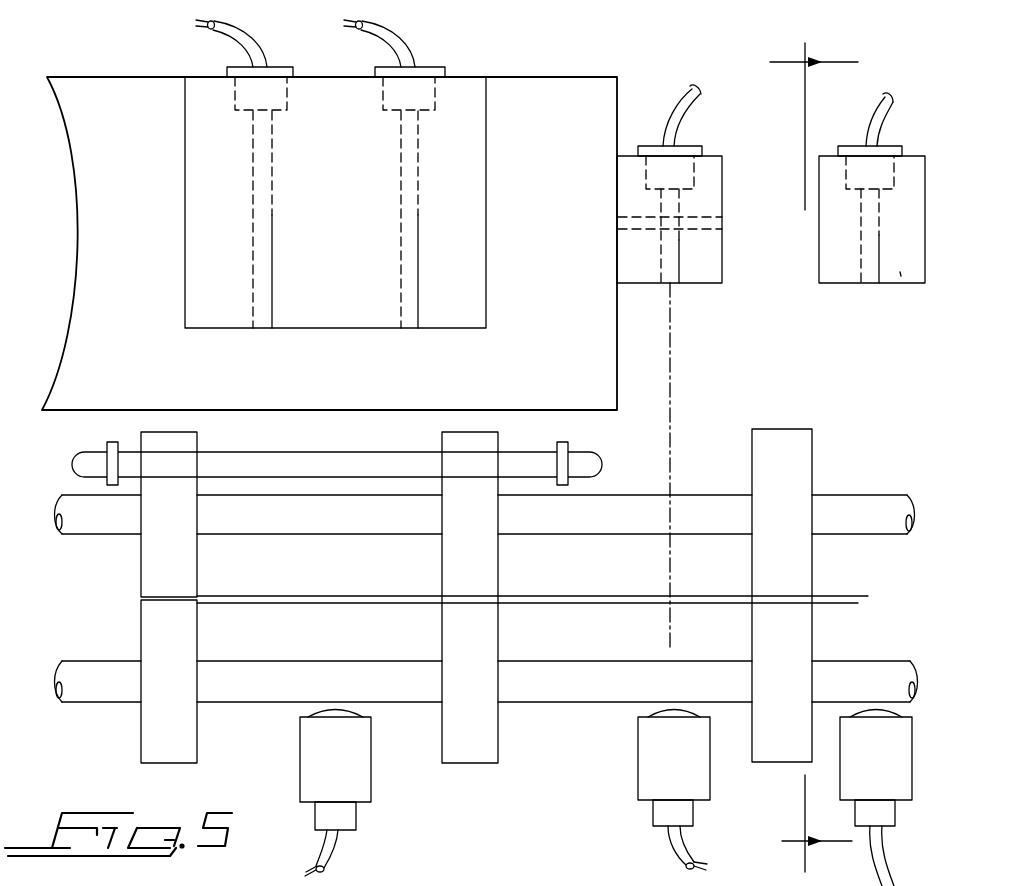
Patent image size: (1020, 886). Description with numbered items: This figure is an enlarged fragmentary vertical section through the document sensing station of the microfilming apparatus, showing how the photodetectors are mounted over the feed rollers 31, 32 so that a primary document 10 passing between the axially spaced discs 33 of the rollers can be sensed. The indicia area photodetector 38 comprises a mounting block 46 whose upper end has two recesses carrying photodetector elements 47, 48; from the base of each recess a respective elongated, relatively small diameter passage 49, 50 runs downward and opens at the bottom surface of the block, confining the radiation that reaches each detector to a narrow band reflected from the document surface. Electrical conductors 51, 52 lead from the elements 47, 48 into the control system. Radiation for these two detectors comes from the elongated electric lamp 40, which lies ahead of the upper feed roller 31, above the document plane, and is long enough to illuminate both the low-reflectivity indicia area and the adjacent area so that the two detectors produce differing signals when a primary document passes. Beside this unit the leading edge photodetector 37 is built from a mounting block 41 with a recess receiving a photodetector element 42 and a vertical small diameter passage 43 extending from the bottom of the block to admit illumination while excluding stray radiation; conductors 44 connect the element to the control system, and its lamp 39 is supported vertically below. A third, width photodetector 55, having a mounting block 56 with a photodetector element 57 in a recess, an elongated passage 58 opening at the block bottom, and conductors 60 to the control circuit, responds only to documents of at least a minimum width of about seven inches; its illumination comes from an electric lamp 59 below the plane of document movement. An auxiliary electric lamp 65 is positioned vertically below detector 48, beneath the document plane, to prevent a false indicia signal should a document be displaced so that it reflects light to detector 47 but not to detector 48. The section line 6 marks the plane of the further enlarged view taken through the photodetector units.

The section line 6— 6 is at (814, 458).
The primary document 10 is at (377, 595).
The feed roller 31 is at (118, 535).
The feed roller 32 is at (118, 703).
The discs 33 is at (152, 575).
The leading edge photodetector 37 is at (722, 185).
The indicia area photodetector 38 is at (527, 128).
The electric lamp 39 is at (638, 765).
The elongated electric lamp 40 is at (340, 452).
The mounting block 41 is at (712, 230).
The photodetector element 42 is at (647, 130).
The passage 43 is at (679, 283).
The electrical conductors 44 is at (683, 100).
The mounting block 46 is at (195, 222).
The photodetector element 47 is at (430, 67).
The photodetector element 48 is at (275, 67).
The passage 49 is at (418, 318).
The passage 50 is at (272, 318).
The electrical conductors 51 is at (410, 45).
The electrical conductors 52 is at (250, 40).
The width photodetector 55 is at (832, 285).
The mounting block 56 is at (900, 274).
The photodetector element 57 is at (858, 146).
The passage 58 is at (879, 283).
The electric lamp 59 is at (892, 802).
The electrical conductors 60 is at (872, 88).
The electric lamp 65 is at (300, 765).